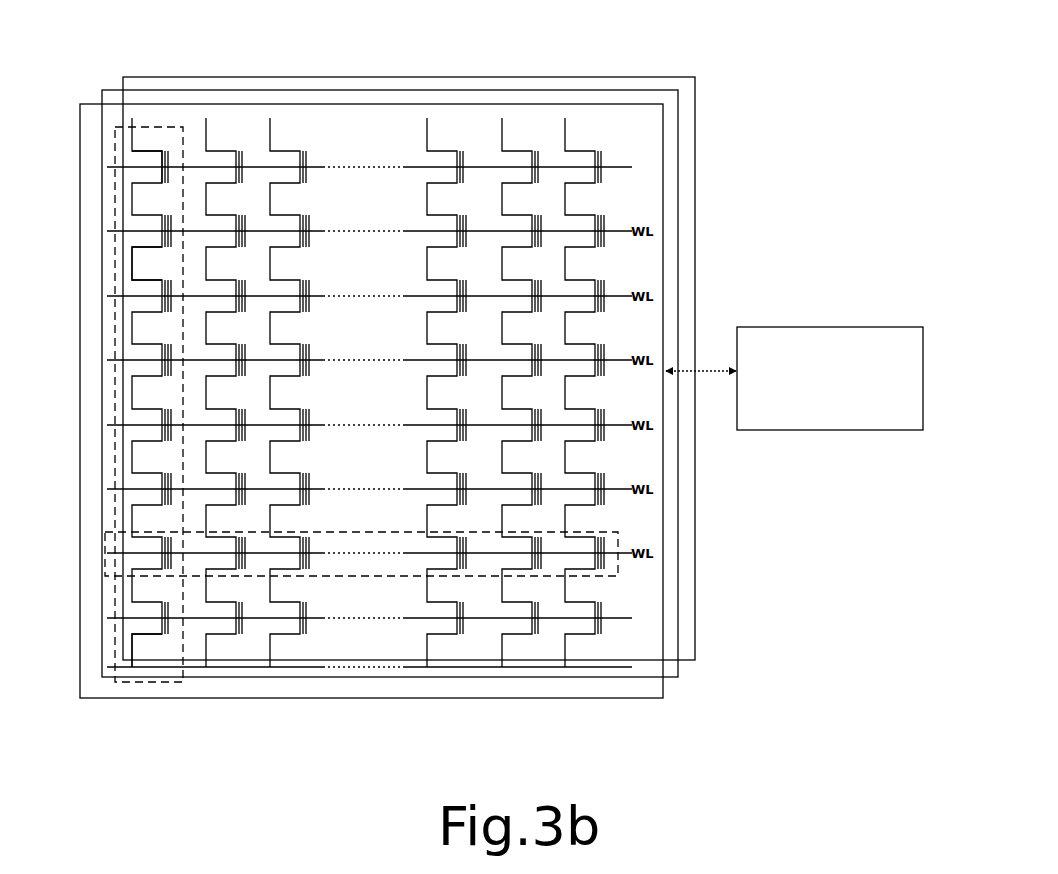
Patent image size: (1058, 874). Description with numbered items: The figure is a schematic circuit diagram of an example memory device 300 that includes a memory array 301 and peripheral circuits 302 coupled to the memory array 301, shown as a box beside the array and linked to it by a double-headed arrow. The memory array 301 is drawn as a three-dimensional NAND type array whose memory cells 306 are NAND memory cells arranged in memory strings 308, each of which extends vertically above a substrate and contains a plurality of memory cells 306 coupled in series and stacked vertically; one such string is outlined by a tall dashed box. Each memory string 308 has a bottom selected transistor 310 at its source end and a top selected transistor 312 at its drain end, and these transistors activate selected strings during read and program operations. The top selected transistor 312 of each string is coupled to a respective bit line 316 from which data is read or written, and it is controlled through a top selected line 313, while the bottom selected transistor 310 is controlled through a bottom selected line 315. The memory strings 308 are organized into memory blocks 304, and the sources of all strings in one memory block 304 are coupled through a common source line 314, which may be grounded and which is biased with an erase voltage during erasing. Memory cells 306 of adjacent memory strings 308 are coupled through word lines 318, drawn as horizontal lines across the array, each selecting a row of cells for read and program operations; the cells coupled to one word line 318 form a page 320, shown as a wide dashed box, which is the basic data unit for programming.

The memory device 300 is at (528, 33).
The memory array 301 is at (661, 66).
The peripheral circuits 302 is at (900, 327).
The memory block 304 is at (565, 104).
The memory cell 306 is at (161, 269).
The memory string 308 is at (115, 207).
The bottom selected transistor 310 is at (162, 643).
The top selected transistor 312 is at (159, 143).
The top selected line 313 is at (603, 167).
The source line 314 is at (222, 667).
The bottom selected line 315 is at (603, 618).
The bit line 316 is at (133, 127).
The word line 318 is at (317, 487).
The page 320 is at (317, 532).